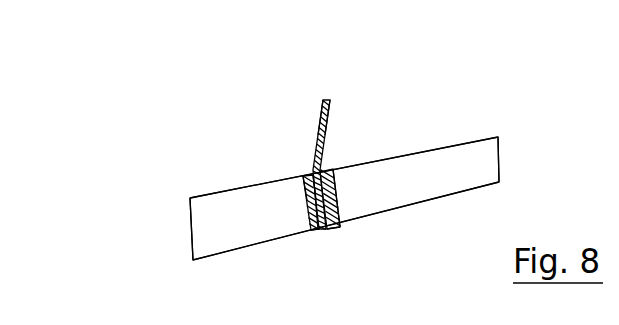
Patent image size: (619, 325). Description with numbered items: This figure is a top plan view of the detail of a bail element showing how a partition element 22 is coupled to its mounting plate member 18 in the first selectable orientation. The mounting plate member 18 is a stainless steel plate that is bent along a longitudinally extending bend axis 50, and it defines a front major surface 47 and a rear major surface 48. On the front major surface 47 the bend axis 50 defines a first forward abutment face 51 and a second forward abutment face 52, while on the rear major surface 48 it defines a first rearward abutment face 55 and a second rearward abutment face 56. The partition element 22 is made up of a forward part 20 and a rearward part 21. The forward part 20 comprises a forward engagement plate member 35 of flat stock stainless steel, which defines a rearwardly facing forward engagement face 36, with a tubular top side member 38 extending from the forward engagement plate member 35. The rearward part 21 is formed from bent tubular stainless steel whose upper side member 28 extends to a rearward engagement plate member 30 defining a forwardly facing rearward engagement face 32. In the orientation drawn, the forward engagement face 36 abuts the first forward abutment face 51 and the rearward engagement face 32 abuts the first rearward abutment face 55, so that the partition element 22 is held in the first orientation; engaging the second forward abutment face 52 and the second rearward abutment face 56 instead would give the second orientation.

The mounting plate member 18 is at (326, 99).
The forward part 20 is at (203, 253).
The rearward part 21 is at (476, 147).
The partition element 22 is at (447, 180).
The upper side member 28 is at (412, 192).
The rearward engagement plate member 30 is at (329, 169).
The rearward engagement face 32 is at (314, 212).
The forward engagement plate member 35 is at (304, 190).
The forward engagement face 36 is at (329, 228).
The top side member 38 is at (218, 205).
The front major surface 47 is at (322, 103).
The rear major surface 48 is at (331, 109).
The bend axis 50 is at (306, 175).
The first forward abutment face 51 is at (312, 196).
The second forward abutment face 52 is at (322, 130).
The first rearward abutment face 55 is at (333, 222).
The second rearward abutment face 56 is at (327, 133).